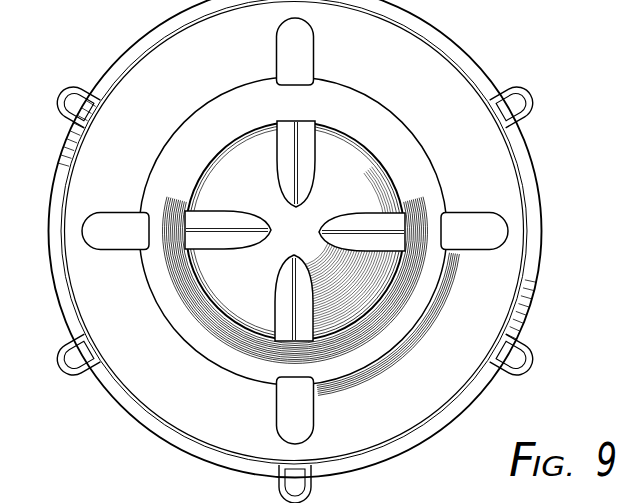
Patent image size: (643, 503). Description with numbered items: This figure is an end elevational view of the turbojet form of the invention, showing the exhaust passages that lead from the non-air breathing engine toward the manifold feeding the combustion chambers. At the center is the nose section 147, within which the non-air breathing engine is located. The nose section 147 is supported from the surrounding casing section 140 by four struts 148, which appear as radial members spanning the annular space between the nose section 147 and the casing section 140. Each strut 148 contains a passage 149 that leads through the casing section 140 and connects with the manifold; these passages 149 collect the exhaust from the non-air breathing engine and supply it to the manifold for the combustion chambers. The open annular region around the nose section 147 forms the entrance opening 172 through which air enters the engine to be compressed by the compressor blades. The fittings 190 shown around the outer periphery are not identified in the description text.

The casing section 140 is at (184, 153).
The nose section 147 is at (295, 231).
The struts 148 is at (231, 243).
The passage 149 is at (468, 240).
The entrance opening 172 is at (367, 312).
The lugs 190 is at (76, 109).